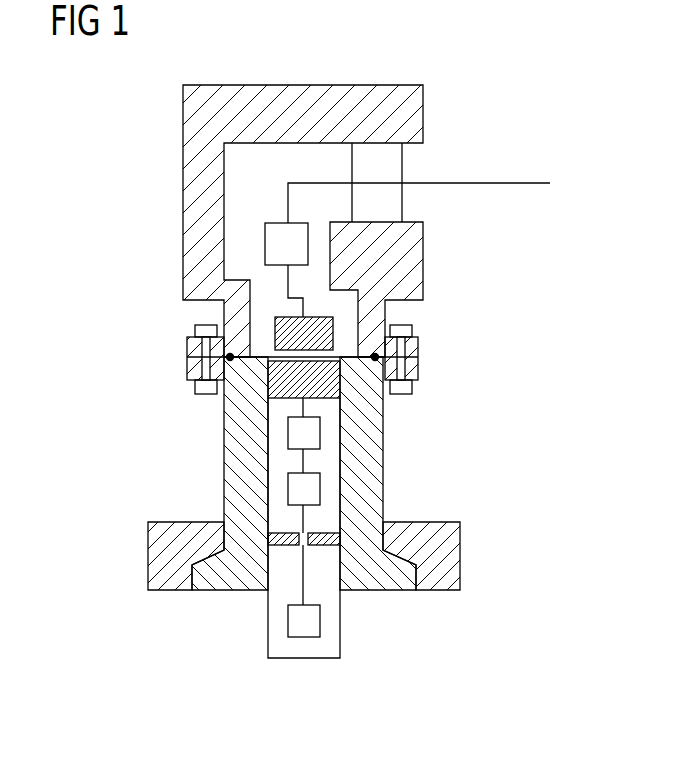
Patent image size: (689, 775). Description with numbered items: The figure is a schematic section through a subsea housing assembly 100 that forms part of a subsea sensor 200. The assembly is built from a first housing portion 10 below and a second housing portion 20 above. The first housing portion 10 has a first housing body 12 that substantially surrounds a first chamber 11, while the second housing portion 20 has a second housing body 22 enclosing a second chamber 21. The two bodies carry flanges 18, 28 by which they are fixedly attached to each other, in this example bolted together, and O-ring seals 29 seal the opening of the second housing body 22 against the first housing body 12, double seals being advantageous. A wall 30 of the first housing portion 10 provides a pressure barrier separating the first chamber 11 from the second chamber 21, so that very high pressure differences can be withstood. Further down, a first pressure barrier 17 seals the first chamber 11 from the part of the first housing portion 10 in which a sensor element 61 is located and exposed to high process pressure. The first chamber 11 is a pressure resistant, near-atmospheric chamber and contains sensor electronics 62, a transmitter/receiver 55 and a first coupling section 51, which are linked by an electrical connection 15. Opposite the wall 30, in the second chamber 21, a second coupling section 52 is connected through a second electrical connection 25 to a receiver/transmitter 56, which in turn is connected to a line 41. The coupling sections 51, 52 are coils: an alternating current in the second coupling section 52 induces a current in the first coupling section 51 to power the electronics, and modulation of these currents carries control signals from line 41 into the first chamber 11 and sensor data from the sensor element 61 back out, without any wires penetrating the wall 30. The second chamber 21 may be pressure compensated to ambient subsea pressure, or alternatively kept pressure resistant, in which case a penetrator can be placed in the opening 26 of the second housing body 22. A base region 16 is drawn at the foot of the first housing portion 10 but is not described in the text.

The first housing portion 10 is at (145, 418).
The first chamber 11 is at (292, 460).
The first housing body 12 is at (237, 445).
The electrical connection 15 is at (285, 406).
The base plate 16 is at (162, 555).
The first pressure barrier 17 is at (283, 550).
The flange 18 is at (418, 365).
The second housing portion 20 is at (113, 192).
The second chamber 21 is at (237, 197).
The second housing body 22 is at (285, 98).
The second electrical connection 25 is at (283, 278).
The opening 26 is at (375, 157).
The flange 28 is at (418, 345).
The O-ring seals 29 is at (187, 341).
The wall 30 is at (258, 352).
The line 41 is at (492, 182).
The first coupling section 51 is at (350, 393).
The second coupling section 52 is at (357, 330).
The transmitter/receiver 55 is at (307, 433).
The receiver/transmitter 56 is at (283, 232).
The sensor element 61 is at (312, 622).
The sensor electronics 62 is at (308, 488).
The subsea housing assembly 100 is at (475, 70).
The subsea sensor 200 is at (462, 655).